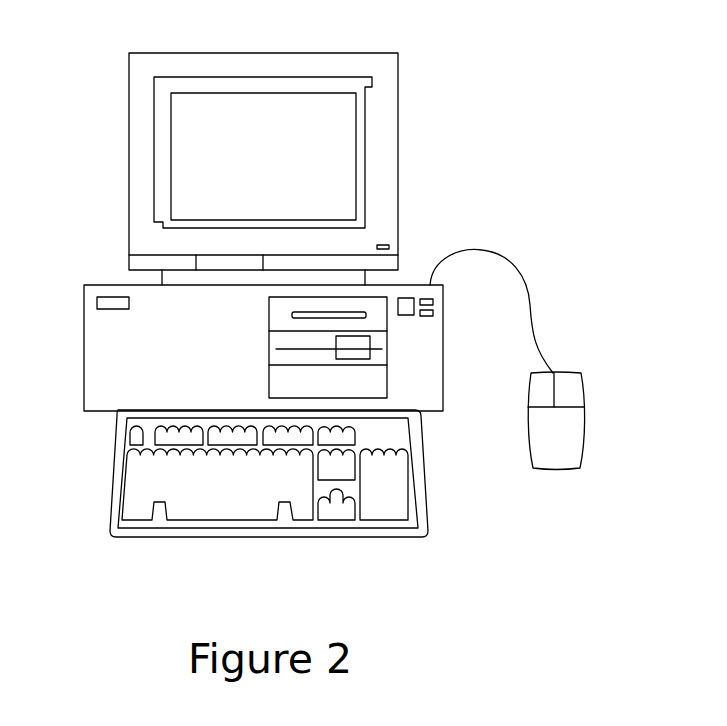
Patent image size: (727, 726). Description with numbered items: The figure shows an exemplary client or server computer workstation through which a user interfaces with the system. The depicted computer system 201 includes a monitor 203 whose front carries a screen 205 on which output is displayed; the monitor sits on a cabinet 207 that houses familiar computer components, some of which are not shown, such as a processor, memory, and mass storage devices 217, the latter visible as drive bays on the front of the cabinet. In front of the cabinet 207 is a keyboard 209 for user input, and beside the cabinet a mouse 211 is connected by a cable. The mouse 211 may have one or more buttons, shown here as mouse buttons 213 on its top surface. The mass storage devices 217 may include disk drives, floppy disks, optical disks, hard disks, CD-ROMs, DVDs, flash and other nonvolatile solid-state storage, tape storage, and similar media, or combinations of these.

The computer system 201 is at (412, 38).
The monitor 203 is at (398, 137).
The screen 205 is at (187, 145).
The cabinet 207 is at (110, 290).
The keyboard 209 is at (153, 537).
The mouse 211 is at (555, 457).
The mouse buttons 213 is at (547, 393).
The mass storage devices 217 is at (378, 302).